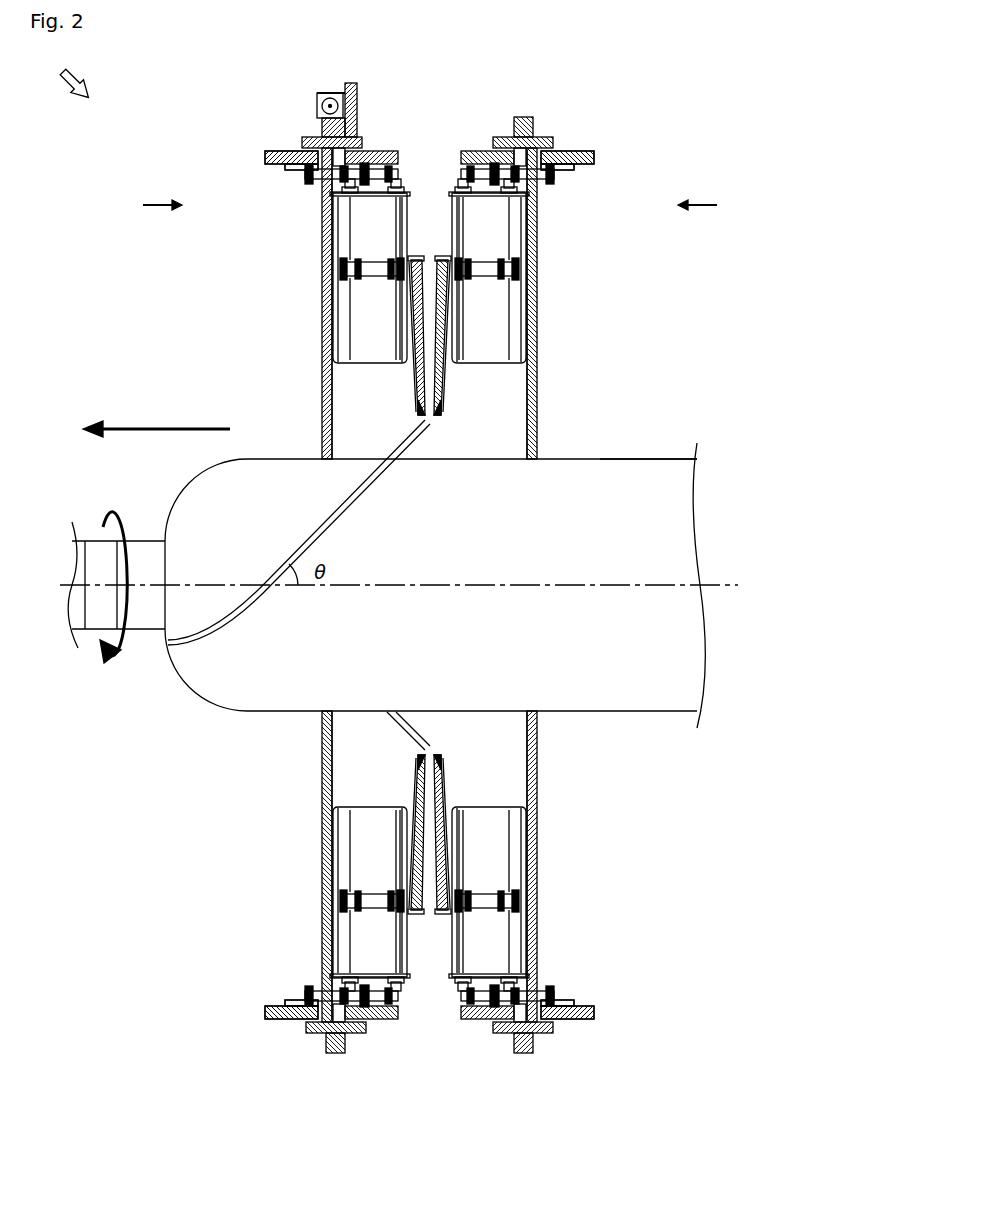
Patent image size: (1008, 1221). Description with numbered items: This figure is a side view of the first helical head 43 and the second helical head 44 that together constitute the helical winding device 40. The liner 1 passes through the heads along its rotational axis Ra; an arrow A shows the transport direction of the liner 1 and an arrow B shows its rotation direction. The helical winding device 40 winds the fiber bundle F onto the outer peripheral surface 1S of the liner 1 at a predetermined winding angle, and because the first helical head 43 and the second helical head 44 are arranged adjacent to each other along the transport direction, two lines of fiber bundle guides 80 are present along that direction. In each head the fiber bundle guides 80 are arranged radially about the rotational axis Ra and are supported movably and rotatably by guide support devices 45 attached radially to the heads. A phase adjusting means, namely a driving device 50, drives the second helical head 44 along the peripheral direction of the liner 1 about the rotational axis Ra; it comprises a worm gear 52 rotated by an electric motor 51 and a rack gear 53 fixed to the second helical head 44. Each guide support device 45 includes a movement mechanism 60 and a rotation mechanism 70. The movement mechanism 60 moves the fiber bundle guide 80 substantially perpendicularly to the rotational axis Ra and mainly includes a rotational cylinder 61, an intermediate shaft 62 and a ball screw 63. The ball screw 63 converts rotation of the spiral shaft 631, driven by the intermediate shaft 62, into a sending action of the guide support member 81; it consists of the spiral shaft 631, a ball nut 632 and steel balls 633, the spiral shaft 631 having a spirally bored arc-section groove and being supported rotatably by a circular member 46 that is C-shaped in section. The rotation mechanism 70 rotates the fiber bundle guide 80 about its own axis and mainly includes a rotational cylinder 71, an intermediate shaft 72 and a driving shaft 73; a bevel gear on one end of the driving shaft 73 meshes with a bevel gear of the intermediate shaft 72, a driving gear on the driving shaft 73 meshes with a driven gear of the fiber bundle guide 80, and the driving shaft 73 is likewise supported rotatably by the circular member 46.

The liner 1 is at (590, 442).
The outer peripheral surface of the liner 1S is at (645, 455).
The helical winding device 40 is at (68, 79).
The first helical head 43 is at (713, 205).
The second helical head 44 is at (147, 205).
The guide support device 45 is at (300, 262).
The circular member 46 is at (322, 326).
The phase adjusting means (driving device) 50 is at (284, 73).
The electric motor 51 is at (317, 106).
The worm gear 52 is at (328, 94).
The rack gear 53 is at (323, 130).
The movement mechanism 60 is at (251, 140).
The rotational cylinder 61 is at (265, 158).
The intermediate shaft 62 is at (305, 180).
The ball screw 63 is at (372, 318).
The spiral shaft 631 is at (372, 202).
The ball nut 632 is at (368, 260).
The steel balls 633 is at (372, 278).
The rotation mechanism 70 is at (390, 135).
The rotational cylinder 71 is at (396, 152).
The intermediate shaft 72 is at (380, 173).
The driving shaft 73 is at (410, 258).
The fiber bundle guide 80 is at (418, 405).
The guide support member 81 is at (410, 365).
The transport direction A is at (156, 417).
The rotation direction B is at (113, 572).
The fiber bundle F is at (415, 437).
The rotational axis Ra is at (727, 583).